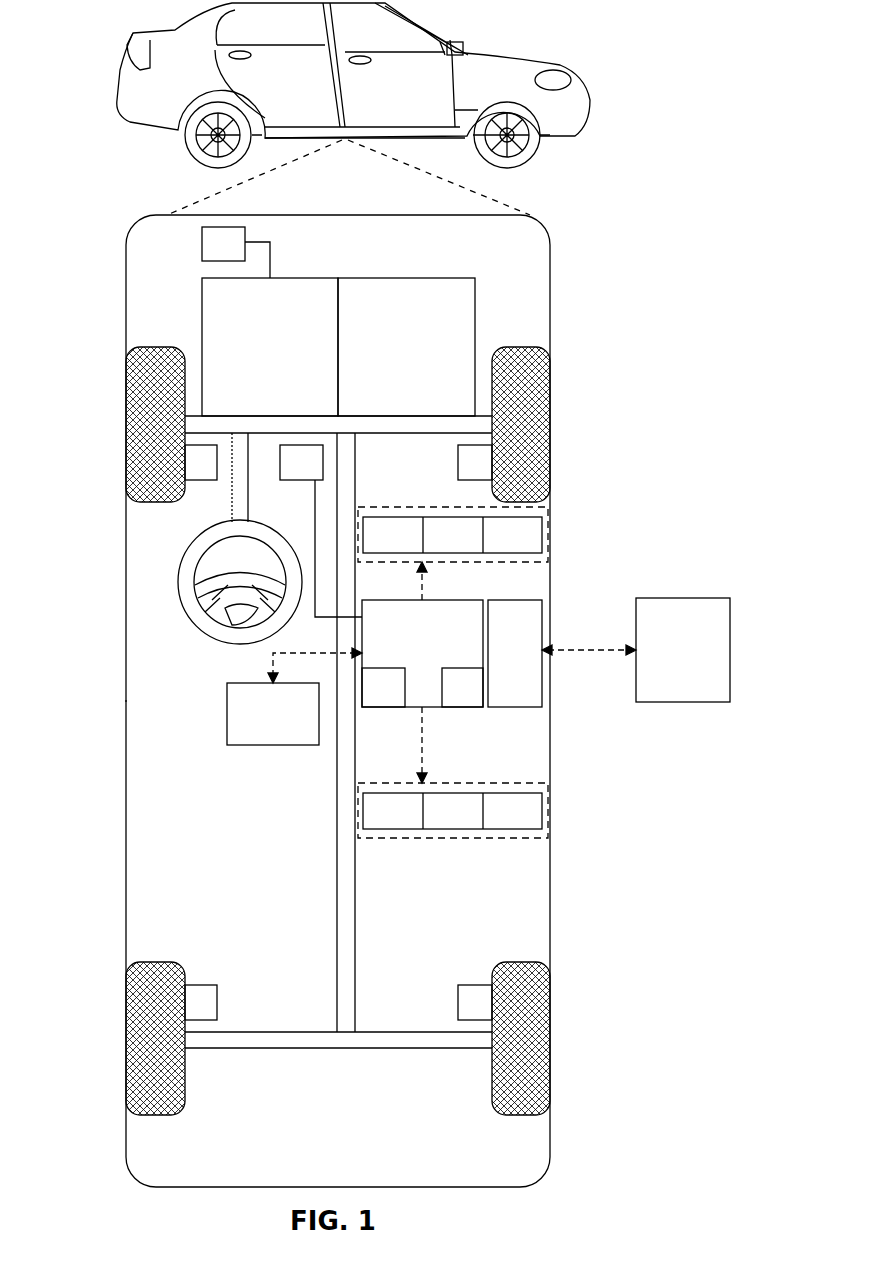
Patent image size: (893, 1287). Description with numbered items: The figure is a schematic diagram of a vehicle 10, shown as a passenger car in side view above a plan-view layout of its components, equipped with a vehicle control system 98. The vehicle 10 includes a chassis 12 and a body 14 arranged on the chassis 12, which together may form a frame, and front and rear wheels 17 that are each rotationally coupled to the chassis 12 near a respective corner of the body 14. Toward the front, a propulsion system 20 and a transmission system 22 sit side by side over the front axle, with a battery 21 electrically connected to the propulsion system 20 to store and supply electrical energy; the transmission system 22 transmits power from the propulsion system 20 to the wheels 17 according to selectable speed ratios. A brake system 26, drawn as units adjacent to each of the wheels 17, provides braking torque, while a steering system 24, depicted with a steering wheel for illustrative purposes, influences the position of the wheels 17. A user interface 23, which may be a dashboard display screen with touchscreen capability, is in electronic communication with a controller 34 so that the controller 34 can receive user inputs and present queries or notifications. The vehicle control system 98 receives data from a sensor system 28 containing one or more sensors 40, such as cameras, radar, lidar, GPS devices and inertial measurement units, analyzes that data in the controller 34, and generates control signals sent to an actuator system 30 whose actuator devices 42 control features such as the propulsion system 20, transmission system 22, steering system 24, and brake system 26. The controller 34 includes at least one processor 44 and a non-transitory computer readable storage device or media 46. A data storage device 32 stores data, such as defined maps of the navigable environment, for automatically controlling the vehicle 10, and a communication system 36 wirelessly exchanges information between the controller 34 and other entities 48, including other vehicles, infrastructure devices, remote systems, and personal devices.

The vehicle 10 is at (118, 68).
The chassis 12 is at (337, 905).
The body 14 is at (126, 772).
The front and rear wheels 17 is at (148, 347).
The propulsion system 20 is at (256, 359).
The battery 21 is at (207, 227).
The transmission system 22 is at (392, 359).
The user interface 23 is at (289, 474).
The steering system 24 is at (260, 500).
The brake system 26 is at (189, 474).
The sensor system 28 is at (432, 507).
The actuator system 30 is at (483, 840).
The data storage device 32 is at (259, 726).
The controller 34 is at (408, 644).
The communication system 36 is at (501, 664).
The sensors 40 is at (381, 546).
The actuator devices 42 is at (381, 822).
The processor 44 is at (371, 698).
The computer readable storage device or media 46 is at (450, 698).
The other entities 48 is at (669, 662).
The vehicle control system 98 is at (582, 232).